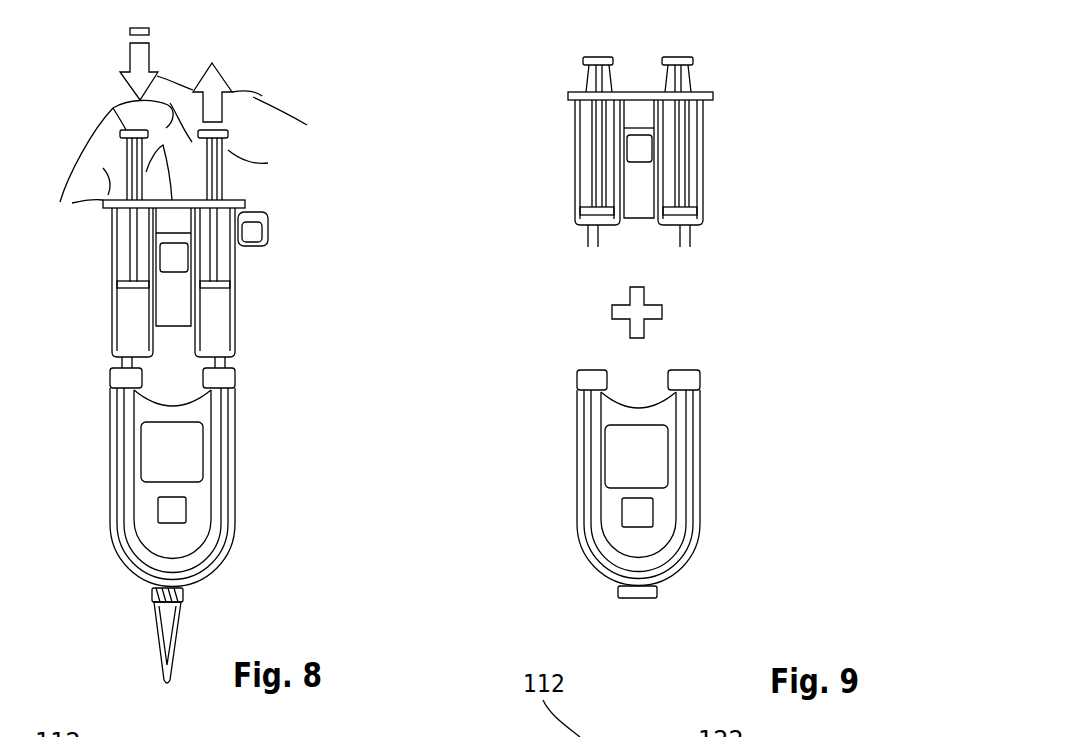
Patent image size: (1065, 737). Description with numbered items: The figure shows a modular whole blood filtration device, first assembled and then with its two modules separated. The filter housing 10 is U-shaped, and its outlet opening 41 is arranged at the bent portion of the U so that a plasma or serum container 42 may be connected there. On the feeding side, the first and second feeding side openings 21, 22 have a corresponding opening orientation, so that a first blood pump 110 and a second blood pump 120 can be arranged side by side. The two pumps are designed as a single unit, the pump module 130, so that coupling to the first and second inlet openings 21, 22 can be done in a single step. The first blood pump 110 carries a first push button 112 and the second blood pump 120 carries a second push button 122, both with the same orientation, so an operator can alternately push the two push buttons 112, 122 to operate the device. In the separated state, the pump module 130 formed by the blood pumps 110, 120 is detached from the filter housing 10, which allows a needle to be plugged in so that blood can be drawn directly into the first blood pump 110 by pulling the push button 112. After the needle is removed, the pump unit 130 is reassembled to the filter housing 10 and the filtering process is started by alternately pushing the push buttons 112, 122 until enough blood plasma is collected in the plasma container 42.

In FIG. 8, the filter housing 10 is at (130, 452).
In FIG. 9, the filter housing 10 is at (695, 498).
In FIG. 8, the first feeding side opening 21 is at (113, 378).
In FIG. 9, the first feeding side opening 21 is at (578, 380).
In FIG. 8, the second feeding side opening 22 is at (228, 380).
In FIG. 9, the second feeding side opening 22 is at (690, 380).
In FIG. 8, the outlet opening 41 is at (158, 590).
In FIG. 9, the outlet opening 41 is at (655, 596).
In FIG. 8, the plasma or serum container 42 is at (162, 620).
In FIG. 8, the first blood pump 110 is at (116, 298).
In FIG. 9, the first blood pump 110 is at (598, 178).
In FIG. 8, the first push button 112 is at (112, 108).
In FIG. 9, the first push button 112 is at (583, 57).
In FIG. 8, the second blood pump 120 is at (218, 312).
In FIG. 9, the second blood pump 120 is at (688, 195).
In FIG. 8, the second push button 122 is at (228, 125).
In FIG. 9, the second push button 122 is at (698, 60).
In FIG. 9, the pump module 130 is at (636, 208).